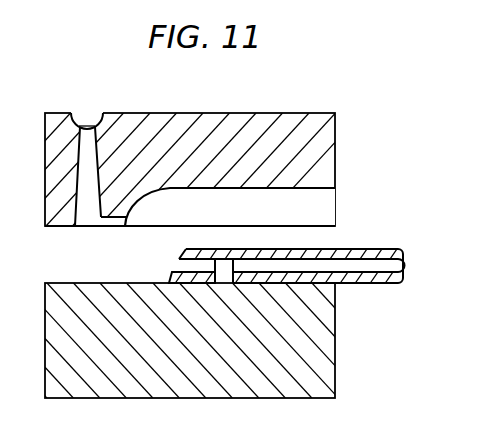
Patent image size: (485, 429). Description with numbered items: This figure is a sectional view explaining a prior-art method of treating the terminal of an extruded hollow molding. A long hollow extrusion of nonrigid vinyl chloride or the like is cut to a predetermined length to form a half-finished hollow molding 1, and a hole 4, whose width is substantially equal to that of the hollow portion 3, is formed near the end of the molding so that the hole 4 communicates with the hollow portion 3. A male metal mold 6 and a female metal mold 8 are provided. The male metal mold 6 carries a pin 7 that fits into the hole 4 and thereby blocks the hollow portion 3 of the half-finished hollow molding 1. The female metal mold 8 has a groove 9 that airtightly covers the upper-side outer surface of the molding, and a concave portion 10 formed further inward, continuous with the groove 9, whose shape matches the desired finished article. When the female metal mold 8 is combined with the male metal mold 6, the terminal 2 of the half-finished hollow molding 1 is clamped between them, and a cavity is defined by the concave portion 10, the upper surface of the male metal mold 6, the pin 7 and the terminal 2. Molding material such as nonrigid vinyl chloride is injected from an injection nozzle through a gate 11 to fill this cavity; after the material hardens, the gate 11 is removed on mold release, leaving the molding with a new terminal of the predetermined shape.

The half-finished hollow molding 1 is at (370, 252).
The terminal 2 is at (182, 256).
The hollow portion 3 is at (378, 274).
The hole 4 is at (214, 274).
The male metal mold 6 is at (336, 383).
The pin 7 is at (230, 251).
The female metal mold 8 is at (187, 117).
The groove 9 is at (331, 198).
The concave portion 10 is at (146, 212).
The gate 11 is at (84, 216).